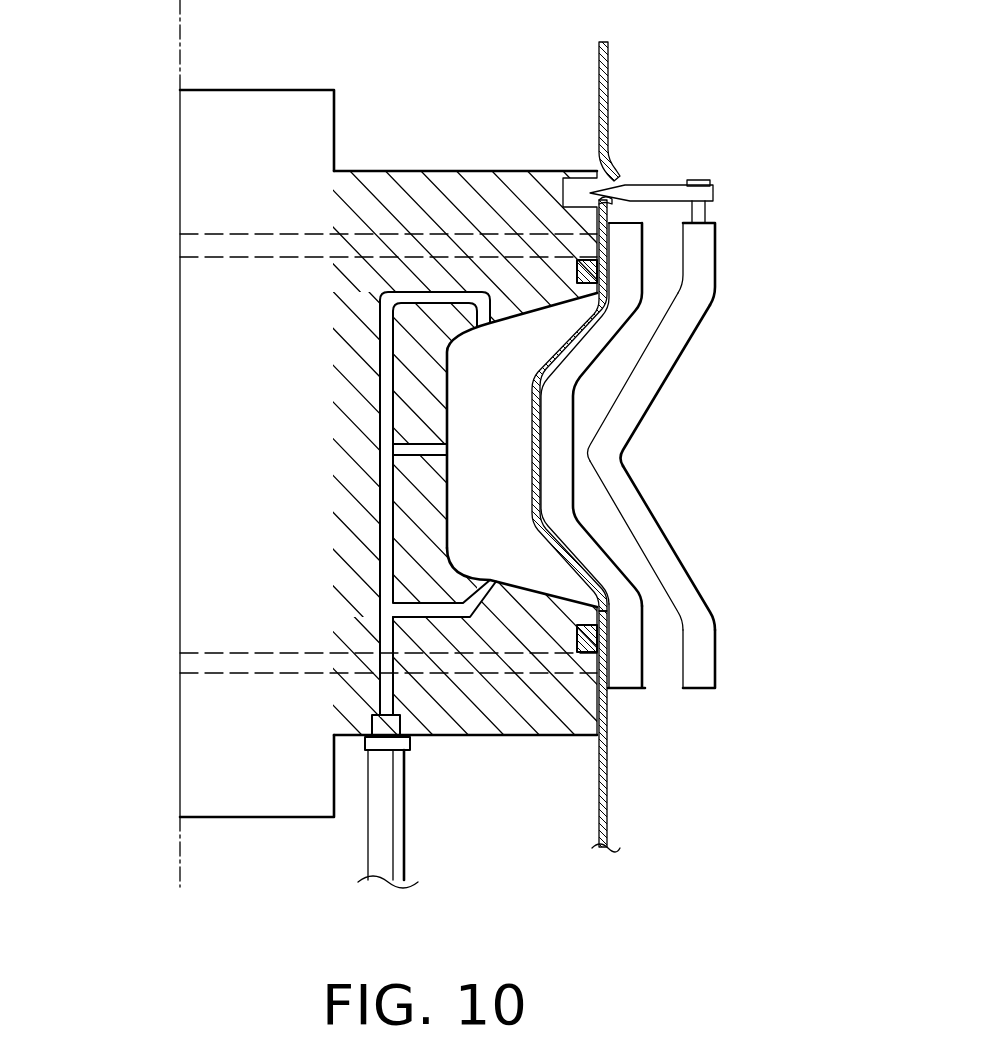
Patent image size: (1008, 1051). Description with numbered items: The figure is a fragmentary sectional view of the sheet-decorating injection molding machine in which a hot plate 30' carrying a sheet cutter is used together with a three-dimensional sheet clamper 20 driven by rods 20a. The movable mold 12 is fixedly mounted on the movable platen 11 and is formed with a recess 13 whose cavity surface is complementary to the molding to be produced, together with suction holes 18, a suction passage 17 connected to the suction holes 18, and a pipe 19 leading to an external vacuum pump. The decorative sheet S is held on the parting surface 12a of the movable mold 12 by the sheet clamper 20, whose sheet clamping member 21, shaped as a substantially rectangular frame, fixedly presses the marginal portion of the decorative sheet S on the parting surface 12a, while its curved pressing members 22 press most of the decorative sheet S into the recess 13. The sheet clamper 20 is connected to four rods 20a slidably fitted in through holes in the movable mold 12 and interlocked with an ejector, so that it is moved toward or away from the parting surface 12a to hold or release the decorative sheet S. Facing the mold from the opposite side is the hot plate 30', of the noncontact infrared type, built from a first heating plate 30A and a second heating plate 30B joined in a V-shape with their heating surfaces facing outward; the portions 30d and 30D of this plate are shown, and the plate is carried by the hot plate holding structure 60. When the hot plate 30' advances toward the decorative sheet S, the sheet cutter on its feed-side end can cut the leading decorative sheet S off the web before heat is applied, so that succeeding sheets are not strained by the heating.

The movable platen 11 is at (260, 111).
The movable mold 12 is at (427, 190).
The parting surface 12a is at (613, 717).
The recess 13 is at (522, 583).
The suction passage 17 is at (380, 553).
The suction holes 18 is at (438, 612).
The pipe 19 is at (392, 847).
The three-dimensional sheet clamper 20 is at (683, 507).
The rods 20a is at (237, 252).
The sheet clamping member 21 is at (630, 627).
The pressing members 22 is at (550, 407).
The hot plate 30' is at (734, 483).
The first heating plate 30A is at (645, 390).
The second heating plate 30B is at (663, 553).
The upper vertical portion 30d is at (708, 257).
The lower vertical portion 30D is at (715, 688).
The hot plate holding structure 60 is at (648, 190).
The decorative sheet S is at (598, 62).